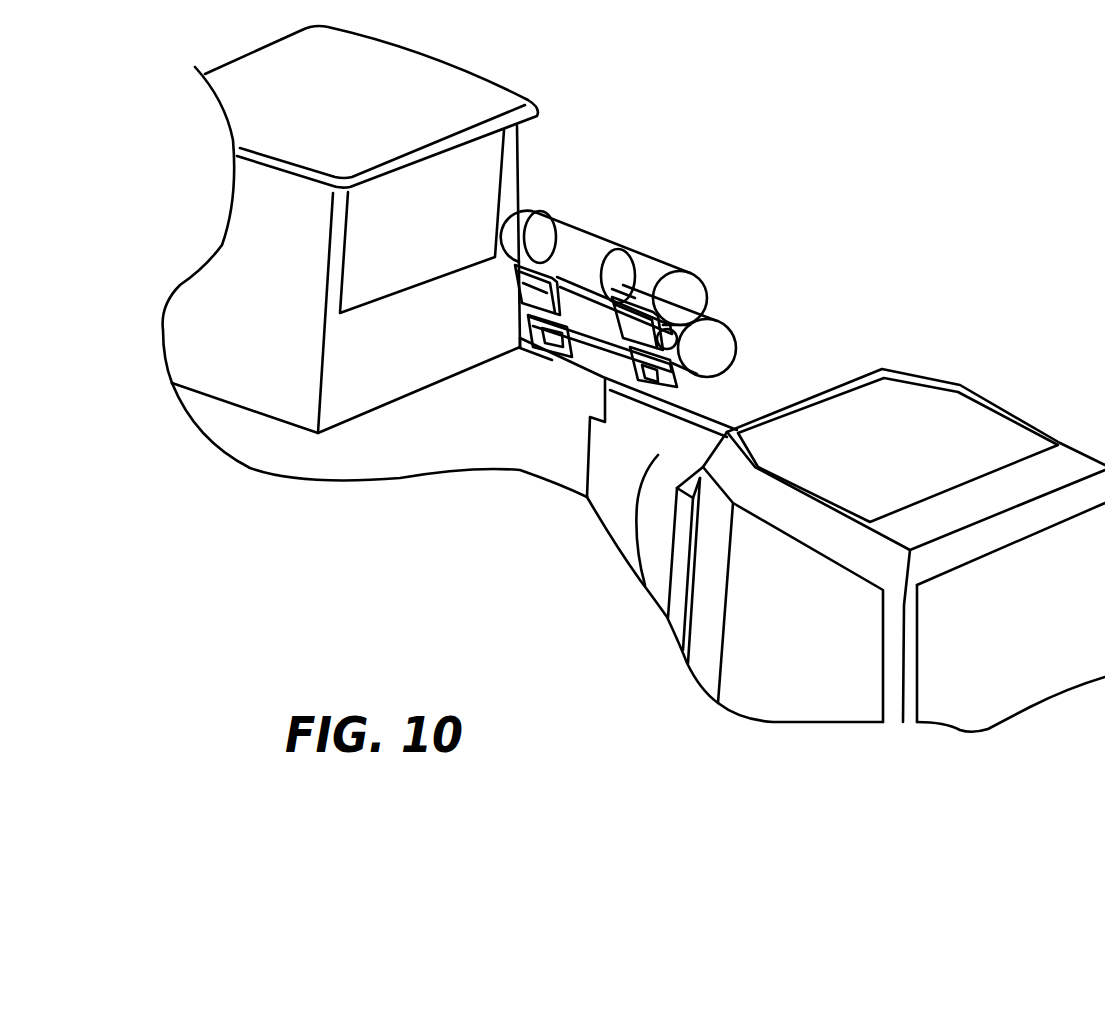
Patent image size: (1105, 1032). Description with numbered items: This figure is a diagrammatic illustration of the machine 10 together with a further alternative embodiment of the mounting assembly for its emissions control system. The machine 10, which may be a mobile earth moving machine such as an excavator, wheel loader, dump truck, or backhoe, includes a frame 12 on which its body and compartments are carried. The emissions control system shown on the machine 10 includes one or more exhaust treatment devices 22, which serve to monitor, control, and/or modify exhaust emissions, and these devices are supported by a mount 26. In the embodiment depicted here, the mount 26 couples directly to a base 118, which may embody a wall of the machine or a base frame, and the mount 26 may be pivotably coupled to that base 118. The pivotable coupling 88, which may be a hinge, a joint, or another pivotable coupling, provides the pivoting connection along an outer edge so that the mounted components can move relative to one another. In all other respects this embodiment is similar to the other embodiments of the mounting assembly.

The machine 10 is at (862, 198).
The frame 12 is at (430, 522).
The exhaust treatment devices 22 is at (531, 213).
The mount 26 is at (517, 284).
The pivotable coupling 88 is at (637, 397).
The base 118 is at (639, 572).